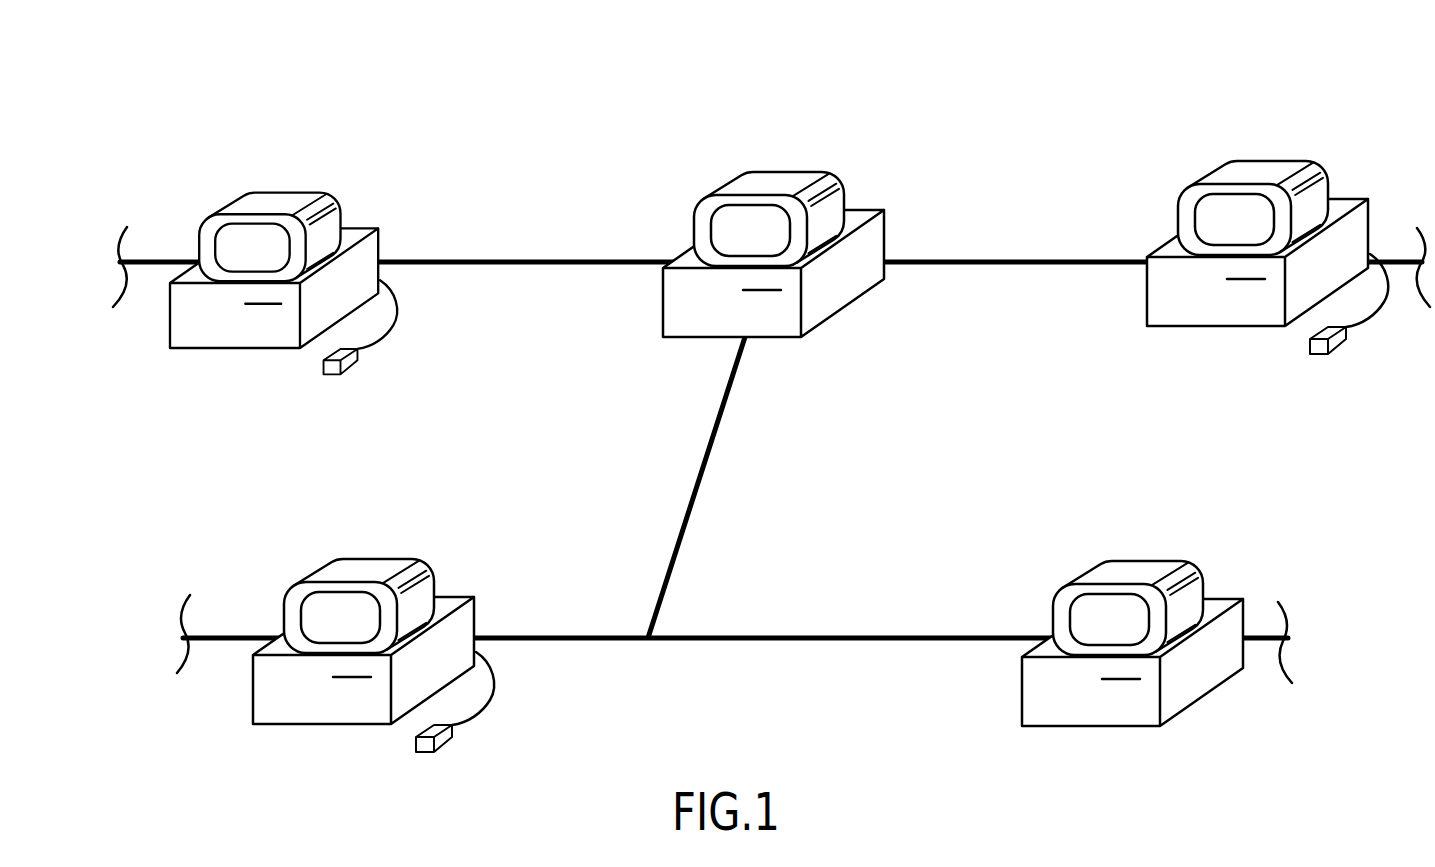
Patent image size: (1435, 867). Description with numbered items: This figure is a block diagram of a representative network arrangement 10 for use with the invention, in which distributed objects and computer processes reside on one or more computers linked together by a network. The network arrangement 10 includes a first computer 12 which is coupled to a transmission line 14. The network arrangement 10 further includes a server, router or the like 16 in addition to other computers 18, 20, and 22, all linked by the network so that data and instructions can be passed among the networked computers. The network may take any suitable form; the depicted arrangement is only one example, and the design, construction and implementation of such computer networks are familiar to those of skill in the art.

The network arrangement 10 is at (183, 102).
The first computer 12 is at (370, 223).
The transmission line 14 is at (480, 265).
The server, router or the like 16 is at (863, 207).
The other computer 18 is at (455, 593).
The other computer 20 is at (1220, 597).
The other computer 22 is at (1147, 303).